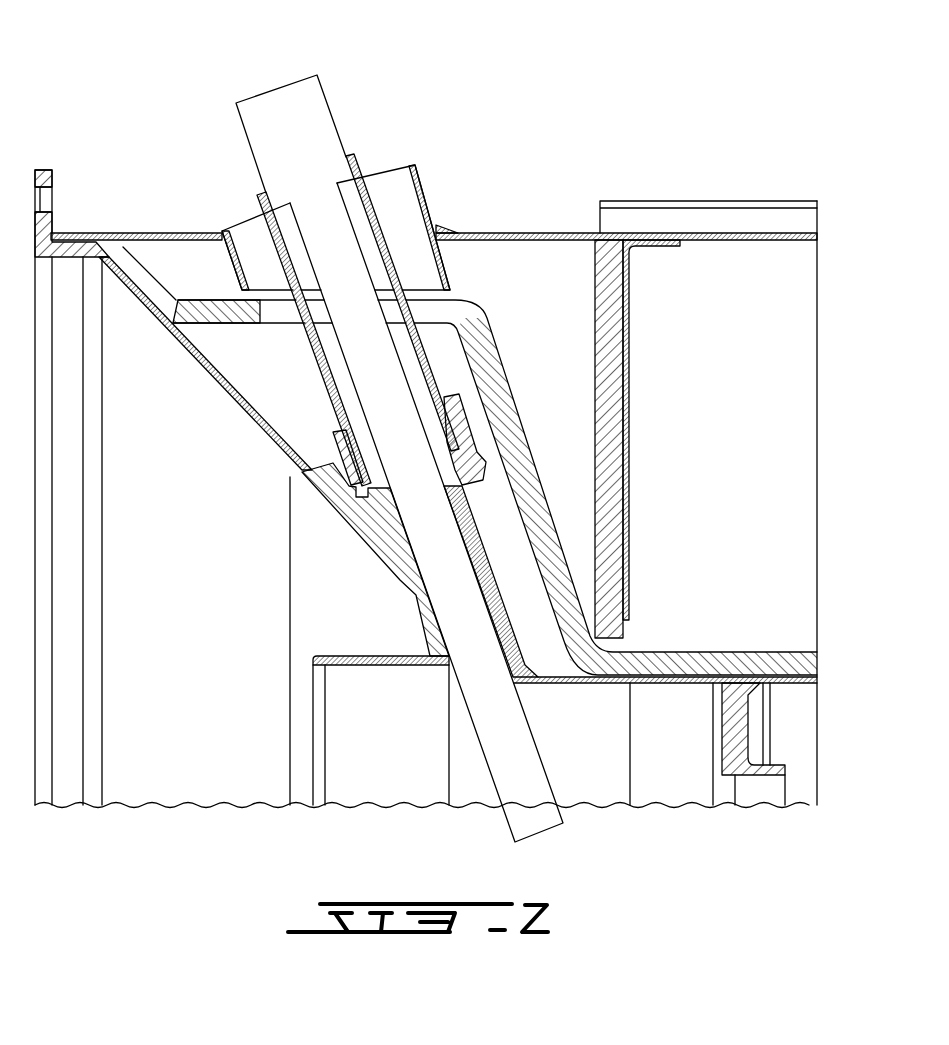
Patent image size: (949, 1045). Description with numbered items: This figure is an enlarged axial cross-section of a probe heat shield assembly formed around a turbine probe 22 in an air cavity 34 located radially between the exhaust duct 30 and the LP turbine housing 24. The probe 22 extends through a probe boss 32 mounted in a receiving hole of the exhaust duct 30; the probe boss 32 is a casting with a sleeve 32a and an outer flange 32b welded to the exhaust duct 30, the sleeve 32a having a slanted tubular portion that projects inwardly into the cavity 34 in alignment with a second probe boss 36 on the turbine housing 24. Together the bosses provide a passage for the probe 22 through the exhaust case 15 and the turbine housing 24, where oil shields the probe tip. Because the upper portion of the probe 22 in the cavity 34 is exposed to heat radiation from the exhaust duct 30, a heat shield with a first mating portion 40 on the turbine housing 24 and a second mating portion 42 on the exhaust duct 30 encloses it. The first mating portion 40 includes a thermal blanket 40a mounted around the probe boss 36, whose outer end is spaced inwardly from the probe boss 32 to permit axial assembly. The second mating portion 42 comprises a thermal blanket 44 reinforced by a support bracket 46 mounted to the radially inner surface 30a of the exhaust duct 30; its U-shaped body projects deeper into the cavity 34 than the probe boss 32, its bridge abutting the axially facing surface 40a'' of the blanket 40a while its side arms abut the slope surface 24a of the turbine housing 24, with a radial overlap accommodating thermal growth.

The exhaust case 15 is at (117, 195).
The probe 22 is at (285, 110).
The LP turbine housing 24 is at (372, 665).
The slope surface 24a is at (246, 412).
The exhaust duct 30 is at (563, 233).
The radially inner surface 30a is at (773, 240).
The probe boss 32 is at (455, 166).
The sleeve 32a is at (433, 207).
The outer flange 32b is at (465, 236).
The air cavity 34 is at (732, 514).
The probe boss 36 is at (466, 427).
The first mating portion 40 is at (571, 541).
The thermal blanket 40a is at (191, 356).
The axially facing surface 40a'' is at (681, 496).
The second mating portion 42 is at (657, 340).
The thermal blanket 44 is at (606, 244).
The support bracket 46 is at (633, 583).